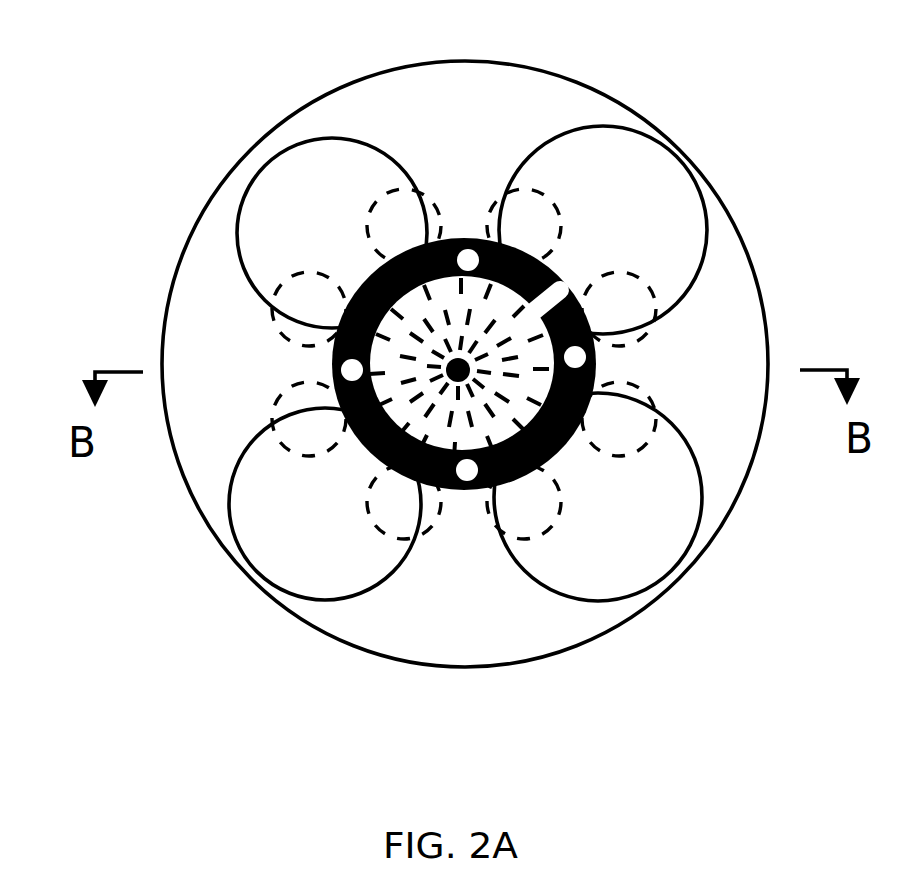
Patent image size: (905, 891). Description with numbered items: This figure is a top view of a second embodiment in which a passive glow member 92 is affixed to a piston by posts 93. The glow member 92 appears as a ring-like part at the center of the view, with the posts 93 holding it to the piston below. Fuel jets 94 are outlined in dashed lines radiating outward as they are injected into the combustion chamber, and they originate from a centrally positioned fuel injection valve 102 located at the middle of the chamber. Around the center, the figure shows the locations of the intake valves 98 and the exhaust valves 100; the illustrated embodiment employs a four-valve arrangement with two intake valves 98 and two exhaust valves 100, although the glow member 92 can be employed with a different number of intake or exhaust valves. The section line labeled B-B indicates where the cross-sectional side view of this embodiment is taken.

The passive glow member 92 is at (567, 285).
The posts 93 is at (332, 333).
The fuel jet 94 is at (647, 345).
The intake valves 98 is at (590, 177).
The exhaust valves 100 is at (302, 177).
The fuel injection valve 102 is at (458, 370).